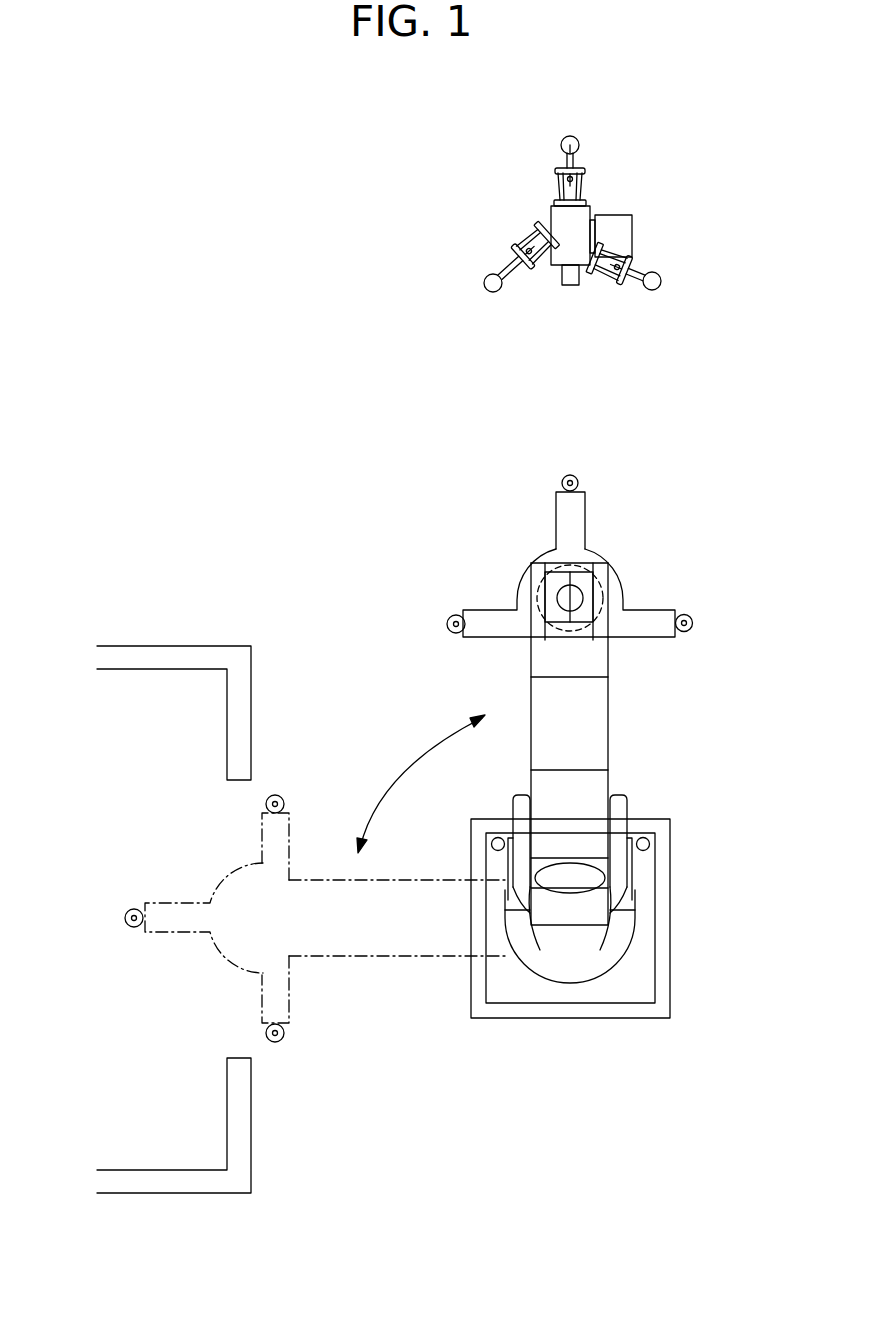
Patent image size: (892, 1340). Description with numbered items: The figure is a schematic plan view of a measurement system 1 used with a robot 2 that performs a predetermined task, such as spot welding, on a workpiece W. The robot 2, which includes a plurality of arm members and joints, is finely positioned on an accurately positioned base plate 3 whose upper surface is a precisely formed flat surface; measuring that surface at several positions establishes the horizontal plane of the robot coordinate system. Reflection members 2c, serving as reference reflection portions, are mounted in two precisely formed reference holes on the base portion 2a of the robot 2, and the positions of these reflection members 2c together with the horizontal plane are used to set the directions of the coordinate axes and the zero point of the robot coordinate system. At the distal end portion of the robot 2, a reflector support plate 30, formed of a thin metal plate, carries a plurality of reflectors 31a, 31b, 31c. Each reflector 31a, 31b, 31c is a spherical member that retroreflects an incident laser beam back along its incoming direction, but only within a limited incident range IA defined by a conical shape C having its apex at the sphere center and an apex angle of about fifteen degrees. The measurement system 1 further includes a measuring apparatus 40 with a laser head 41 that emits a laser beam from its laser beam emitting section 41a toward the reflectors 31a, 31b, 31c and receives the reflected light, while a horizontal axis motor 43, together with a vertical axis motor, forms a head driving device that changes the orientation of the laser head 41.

The measurement system 1 is at (451, 639).
The measuring apparatus 40 is at (592, 229).
The laser head 41 is at (550, 217).
The laser beam emitting section 41a is at (582, 277).
The horizontal axis motor 43 is at (632, 227).
The reflector support plate 30 is at (576, 551).
The reflector 31a is at (562, 483).
The reflector 31b is at (457, 614).
The reflector 31c is at (692, 628).
The robot 2 is at (622, 719).
The base portion 2a is at (655, 913).
The reflection member 2c is at (491, 843).
The base plate 3 is at (670, 975).
The incident range IA is at (570, 474).
The conical shape C is at (578, 483).
The workpiece W is at (177, 645).